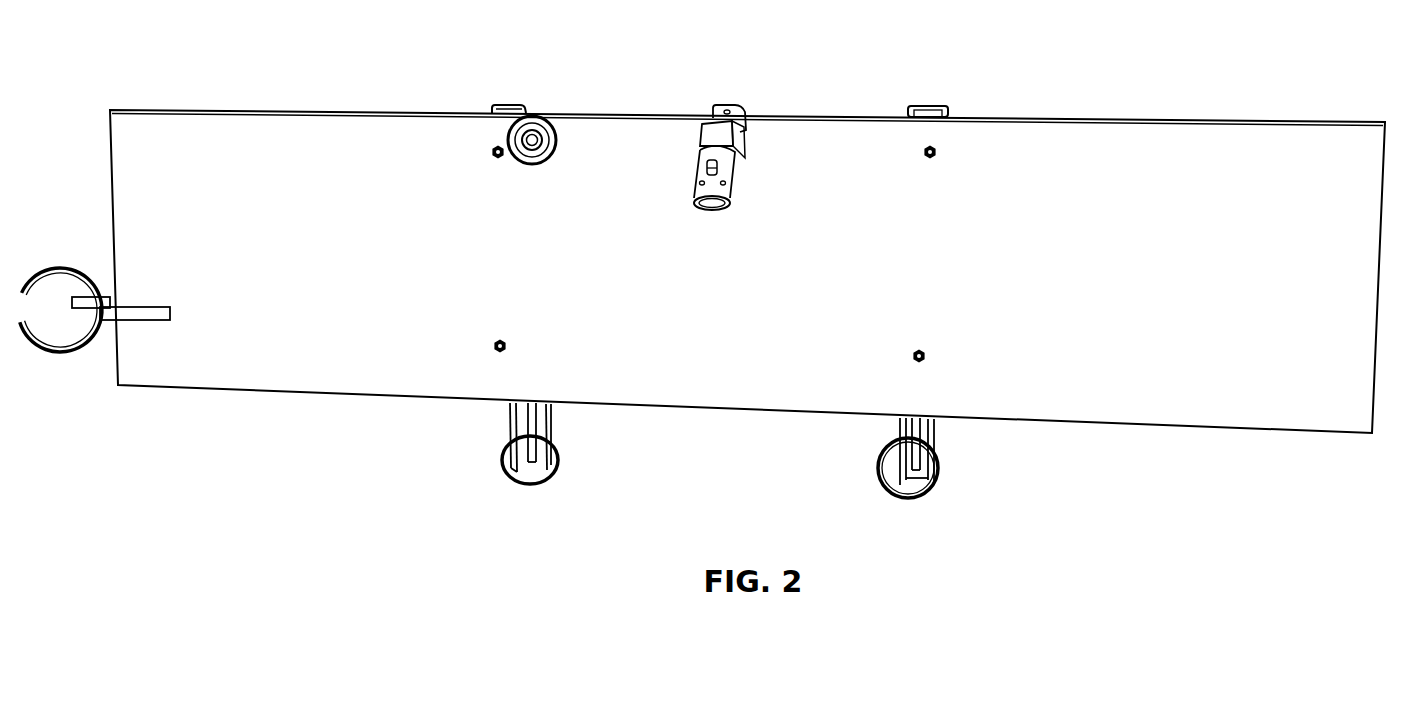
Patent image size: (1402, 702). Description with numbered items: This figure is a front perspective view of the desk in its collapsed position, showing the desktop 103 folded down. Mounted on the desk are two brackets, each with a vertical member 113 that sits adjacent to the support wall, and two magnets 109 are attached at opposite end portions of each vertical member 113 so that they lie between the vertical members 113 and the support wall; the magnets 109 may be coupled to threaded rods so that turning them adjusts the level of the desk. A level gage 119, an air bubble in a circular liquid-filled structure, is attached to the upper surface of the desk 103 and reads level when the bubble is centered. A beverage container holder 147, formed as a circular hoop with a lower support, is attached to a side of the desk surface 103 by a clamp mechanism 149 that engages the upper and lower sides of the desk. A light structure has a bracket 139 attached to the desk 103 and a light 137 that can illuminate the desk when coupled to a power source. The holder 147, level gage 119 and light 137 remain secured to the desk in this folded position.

The desktop 103 is at (1118, 135).
The magnet 109 is at (508, 103).
The vertical member 113 is at (540, 415).
The level gage 119 is at (528, 130).
The light 137 is at (713, 212).
The bracket 139 is at (717, 108).
The beverage container holder 147 is at (52, 352).
The clamp mechanism 149 is at (160, 312).